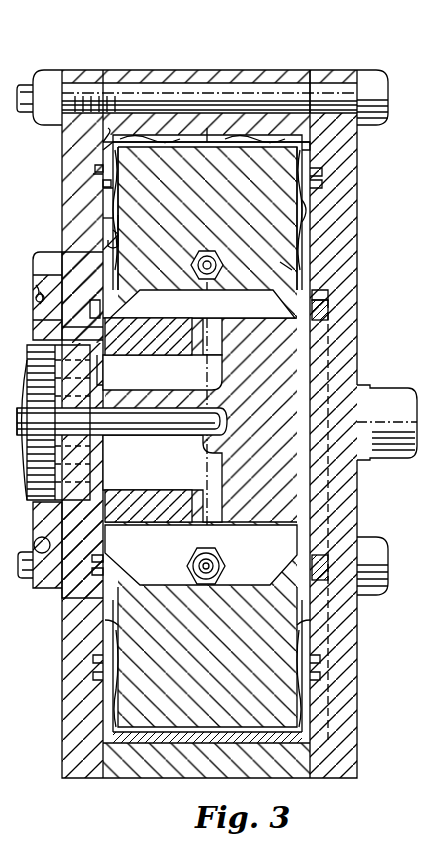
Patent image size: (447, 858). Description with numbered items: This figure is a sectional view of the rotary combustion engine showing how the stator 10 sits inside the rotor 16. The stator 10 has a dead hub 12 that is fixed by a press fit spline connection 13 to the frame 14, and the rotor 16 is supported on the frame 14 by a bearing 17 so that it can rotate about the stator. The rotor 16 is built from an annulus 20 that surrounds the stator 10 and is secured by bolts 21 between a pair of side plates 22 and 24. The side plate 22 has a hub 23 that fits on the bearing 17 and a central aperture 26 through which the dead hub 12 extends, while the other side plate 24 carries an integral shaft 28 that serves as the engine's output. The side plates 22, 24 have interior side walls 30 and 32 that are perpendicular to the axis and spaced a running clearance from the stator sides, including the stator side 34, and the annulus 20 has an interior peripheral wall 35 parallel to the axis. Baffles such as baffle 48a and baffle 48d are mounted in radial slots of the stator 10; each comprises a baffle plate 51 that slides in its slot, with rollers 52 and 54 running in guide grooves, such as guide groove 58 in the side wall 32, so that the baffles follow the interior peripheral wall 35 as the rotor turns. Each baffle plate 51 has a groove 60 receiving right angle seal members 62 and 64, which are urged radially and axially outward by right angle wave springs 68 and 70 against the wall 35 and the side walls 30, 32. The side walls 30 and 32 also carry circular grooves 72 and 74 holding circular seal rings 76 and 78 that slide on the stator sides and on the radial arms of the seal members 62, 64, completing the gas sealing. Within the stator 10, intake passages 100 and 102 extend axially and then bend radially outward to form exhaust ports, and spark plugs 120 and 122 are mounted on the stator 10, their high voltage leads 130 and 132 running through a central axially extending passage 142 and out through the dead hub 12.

The stator 10 is at (297, 486).
The dead hub 12 is at (27, 380).
The press fit spline connection 13 is at (26, 482).
The frame 14 is at (36, 528).
The rotor 16 is at (128, 63).
The bearing 17 is at (36, 290).
The annulus 20 is at (256, 72).
The bolts 21 is at (372, 78).
The side plate 22 is at (86, 72).
The hub 23 is at (46, 262).
The side plate 24 is at (338, 74).
The central aperture 26 is at (104, 492).
The shaft 28 is at (396, 386).
The interior side wall 30 is at (108, 137).
The interior side wall 32 is at (308, 212).
The stator side 34 is at (292, 378).
The interior peripheral wall 35 is at (150, 135).
The baffle 48a is at (277, 224).
The baffle 48d is at (285, 622).
The baffle plate 51 is at (286, 268).
The roller 52 is at (92, 312).
The roller 54 is at (320, 305).
The guide groove 58 is at (320, 295).
The groove 60 is at (120, 235).
The right angle seal member 62 is at (106, 198).
The right angle seal member 64 is at (306, 150).
The right angle wave spring 68 is at (114, 220).
The right angle wave spring 70 is at (303, 240).
The circular groove 72 is at (94, 168).
The circular groove 74 is at (318, 172).
The circular seal ring 76 is at (100, 176).
The circular seal ring 78 is at (318, 185).
The intake passage 100 is at (108, 560).
The intake passage 102 is at (140, 332).
The spark plug 120 is at (226, 565).
The spark plug 122 is at (220, 283).
The high voltage lead 130 is at (140, 440).
The high voltage lead 132 is at (204, 412).
The central axially extending passage 142 is at (104, 396).